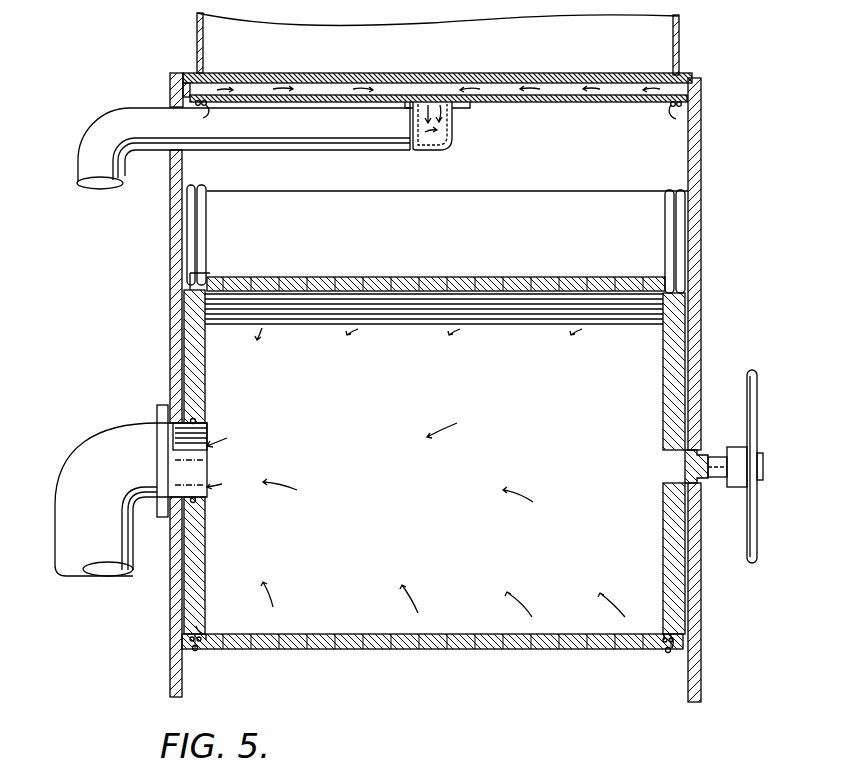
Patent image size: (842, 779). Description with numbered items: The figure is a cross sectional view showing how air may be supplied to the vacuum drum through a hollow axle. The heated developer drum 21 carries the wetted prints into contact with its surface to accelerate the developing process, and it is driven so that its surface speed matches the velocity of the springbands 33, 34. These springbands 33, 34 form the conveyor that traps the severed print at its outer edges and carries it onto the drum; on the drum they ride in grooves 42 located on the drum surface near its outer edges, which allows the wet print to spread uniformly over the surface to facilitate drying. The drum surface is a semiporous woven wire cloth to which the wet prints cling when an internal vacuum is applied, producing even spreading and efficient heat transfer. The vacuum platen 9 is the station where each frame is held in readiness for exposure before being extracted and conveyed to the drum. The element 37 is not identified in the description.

The vacuum platen 9 is at (559, 96).
The heated developer drum 21 is at (446, 628).
The springband 33 is at (205, 110).
The springband 34 is at (197, 650).
The partition 37 is at (535, 175).
The grooves 42 is at (190, 276).